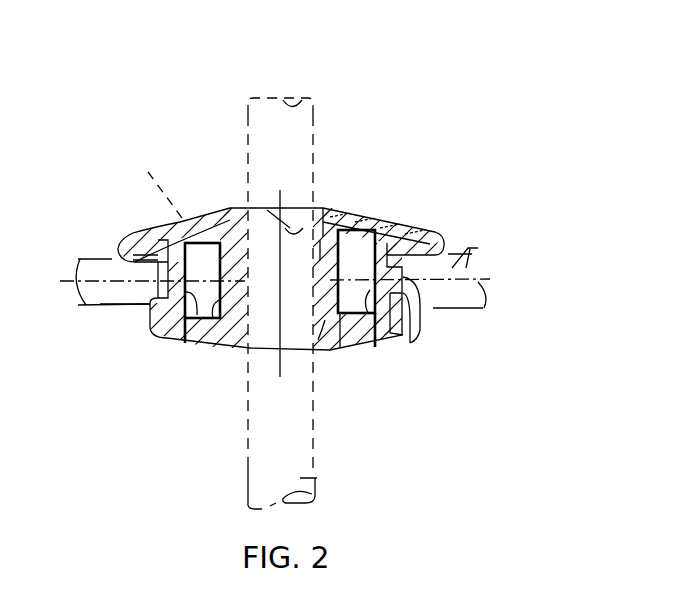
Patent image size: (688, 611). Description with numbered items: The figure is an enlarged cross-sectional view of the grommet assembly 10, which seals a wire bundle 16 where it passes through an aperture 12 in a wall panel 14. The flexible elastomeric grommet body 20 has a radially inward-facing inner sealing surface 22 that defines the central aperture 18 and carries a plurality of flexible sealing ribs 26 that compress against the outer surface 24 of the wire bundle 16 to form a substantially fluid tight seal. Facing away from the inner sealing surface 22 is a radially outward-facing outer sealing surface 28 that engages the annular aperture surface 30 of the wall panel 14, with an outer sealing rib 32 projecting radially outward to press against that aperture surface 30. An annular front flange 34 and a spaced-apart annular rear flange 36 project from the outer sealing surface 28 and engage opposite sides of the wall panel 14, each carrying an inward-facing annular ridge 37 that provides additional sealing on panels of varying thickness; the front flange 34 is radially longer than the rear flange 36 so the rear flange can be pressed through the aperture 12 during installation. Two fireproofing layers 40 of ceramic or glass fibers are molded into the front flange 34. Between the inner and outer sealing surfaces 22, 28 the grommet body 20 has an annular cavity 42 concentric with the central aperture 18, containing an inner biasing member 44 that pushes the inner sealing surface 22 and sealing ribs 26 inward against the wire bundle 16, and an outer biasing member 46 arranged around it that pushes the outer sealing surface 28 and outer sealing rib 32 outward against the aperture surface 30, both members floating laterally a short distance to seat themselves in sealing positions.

The grommet assembly 10 is at (428, 62).
The aperture 12 is at (428, 284).
The wall panel 14 is at (455, 246).
The wire bundle 16 is at (325, 478).
The central aperture 18 is at (323, 205).
The grommet body 20 is at (436, 230).
The inner sealing surface 22 is at (383, 236).
The outer surface of the wire bundle 24 is at (262, 205).
The sealing ribs 26 is at (318, 248).
The outer sealing surface 28 is at (440, 237).
The aperture surface 30 is at (158, 270).
The outer sealing rib 32 is at (422, 274).
The front flange 34 is at (441, 230).
The rear flange 36 is at (403, 340).
The annular ridge 37 is at (452, 252).
The fireproofing layers 40 is at (172, 220).
The annular cavity 42 is at (223, 290).
The inner biasing member 44 is at (213, 300).
The outer biasing member 46 is at (185, 340).